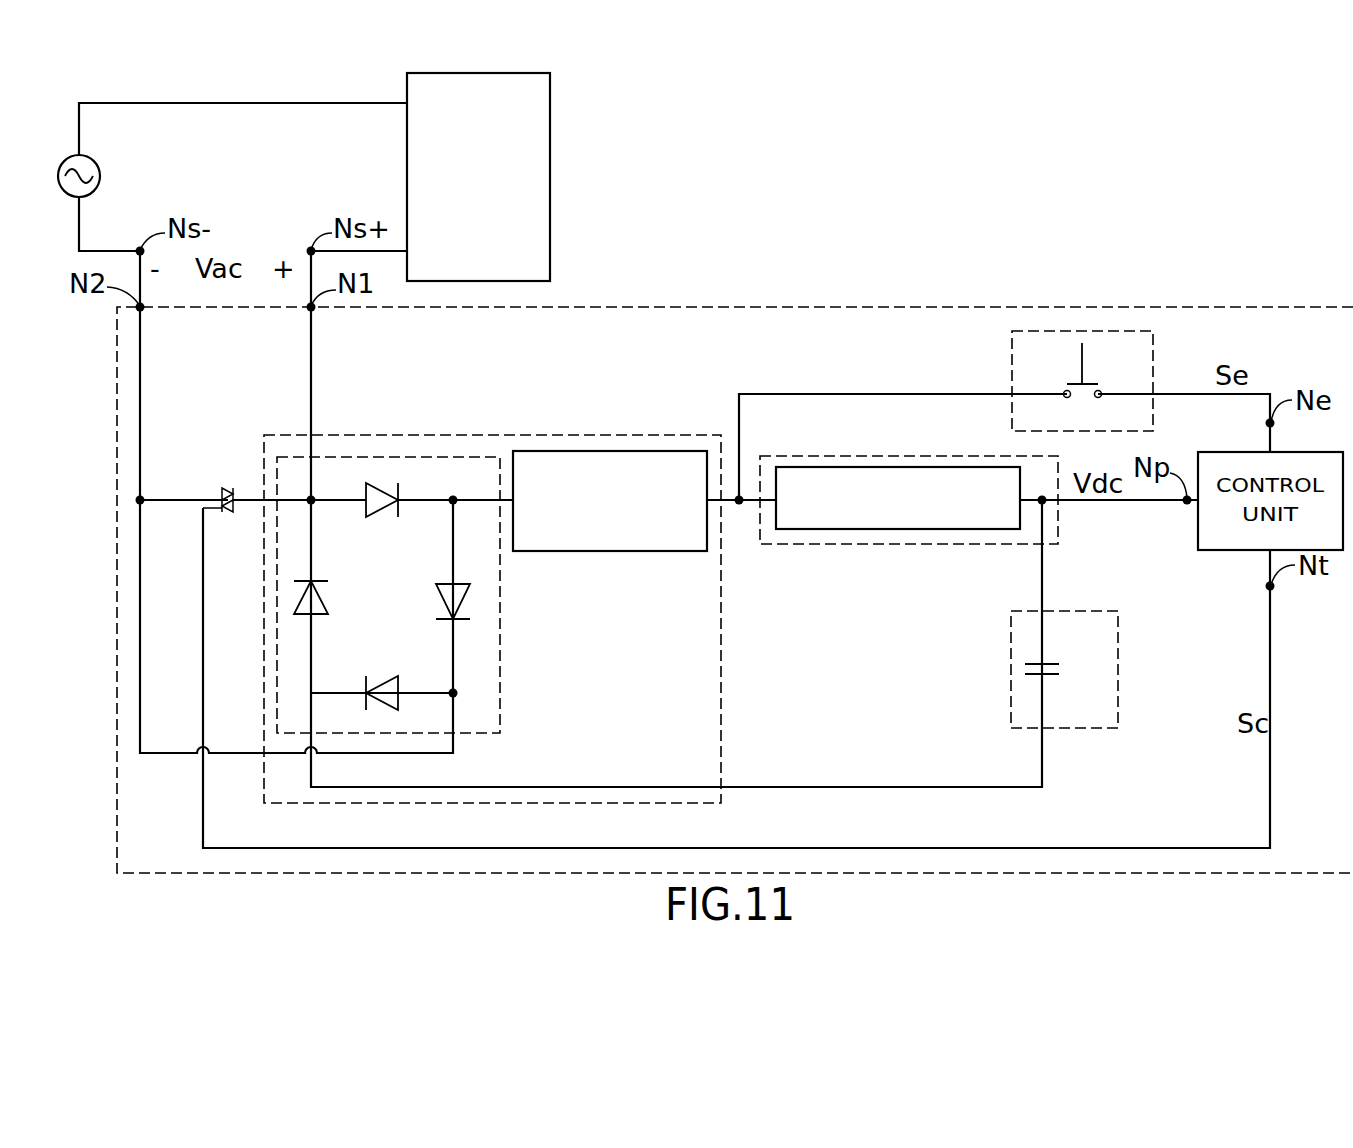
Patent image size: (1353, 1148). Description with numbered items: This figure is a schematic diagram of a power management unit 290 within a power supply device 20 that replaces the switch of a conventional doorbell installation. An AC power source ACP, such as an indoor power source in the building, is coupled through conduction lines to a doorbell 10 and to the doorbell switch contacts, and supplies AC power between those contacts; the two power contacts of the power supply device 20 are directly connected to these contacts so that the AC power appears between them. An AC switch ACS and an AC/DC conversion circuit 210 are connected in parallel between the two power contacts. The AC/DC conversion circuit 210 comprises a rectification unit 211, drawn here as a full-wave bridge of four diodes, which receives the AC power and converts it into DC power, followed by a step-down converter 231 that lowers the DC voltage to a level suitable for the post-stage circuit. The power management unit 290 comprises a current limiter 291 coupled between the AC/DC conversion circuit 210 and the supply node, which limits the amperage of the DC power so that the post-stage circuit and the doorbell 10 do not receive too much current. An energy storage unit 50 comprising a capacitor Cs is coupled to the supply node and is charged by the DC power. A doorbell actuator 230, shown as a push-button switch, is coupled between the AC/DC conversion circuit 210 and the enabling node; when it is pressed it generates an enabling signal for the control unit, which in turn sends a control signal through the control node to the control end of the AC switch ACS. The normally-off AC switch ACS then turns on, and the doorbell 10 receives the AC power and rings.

The doorbell 10 is at (467, 200).
The power supply device 20 is at (805, 306).
The AC/DC conversion circuit 210 is at (552, 434).
The rectification unit 211 is at (500, 696).
The step-down converter 231 is at (592, 539).
The doorbell actuator 230 is at (1012, 381).
The power management unit 290 is at (913, 455).
The current limiter 291 is at (953, 530).
The energy storage unit 50 is at (1103, 669).
The AC power source ACP is at (95, 164).
The AC switch ACS is at (229, 487).
The capacitor Cs is at (1061, 670).